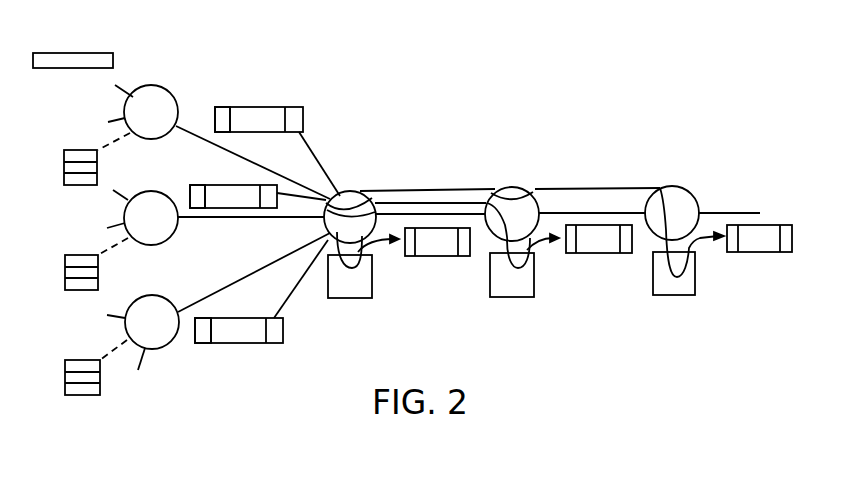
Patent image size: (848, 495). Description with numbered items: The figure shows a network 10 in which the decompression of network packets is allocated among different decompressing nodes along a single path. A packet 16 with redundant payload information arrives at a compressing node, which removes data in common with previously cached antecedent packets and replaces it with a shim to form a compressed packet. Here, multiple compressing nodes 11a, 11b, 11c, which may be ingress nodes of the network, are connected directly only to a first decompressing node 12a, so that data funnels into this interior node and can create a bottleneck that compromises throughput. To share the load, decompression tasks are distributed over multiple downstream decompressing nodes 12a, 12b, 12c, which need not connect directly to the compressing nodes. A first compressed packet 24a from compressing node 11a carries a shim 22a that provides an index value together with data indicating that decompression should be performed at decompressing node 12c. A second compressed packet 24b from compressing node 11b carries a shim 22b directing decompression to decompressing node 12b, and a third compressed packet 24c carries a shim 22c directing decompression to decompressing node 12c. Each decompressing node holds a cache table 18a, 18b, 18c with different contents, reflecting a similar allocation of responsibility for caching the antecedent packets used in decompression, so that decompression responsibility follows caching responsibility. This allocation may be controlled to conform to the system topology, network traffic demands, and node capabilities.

The network 10 is at (442, 112).
The packet 16 is at (72, 53).
The compressing node 11a is at (160, 88).
The compressing node 11b is at (152, 191).
The compressing node 11c is at (155, 295).
The decompressing node 12a is at (347, 190).
The decompressing node 12b is at (510, 187).
The decompressing node 12c is at (672, 187).
The cache table 18a is at (360, 298).
The cache table 18b is at (534, 283).
The cache table 18c is at (695, 280).
The shim 22a is at (266, 107).
The shim 22b is at (232, 210).
The shim 22c is at (252, 345).
The compressed packet 24a is at (219, 107).
The compressed packet 24b is at (197, 185).
The compressed packet 24c is at (208, 318).